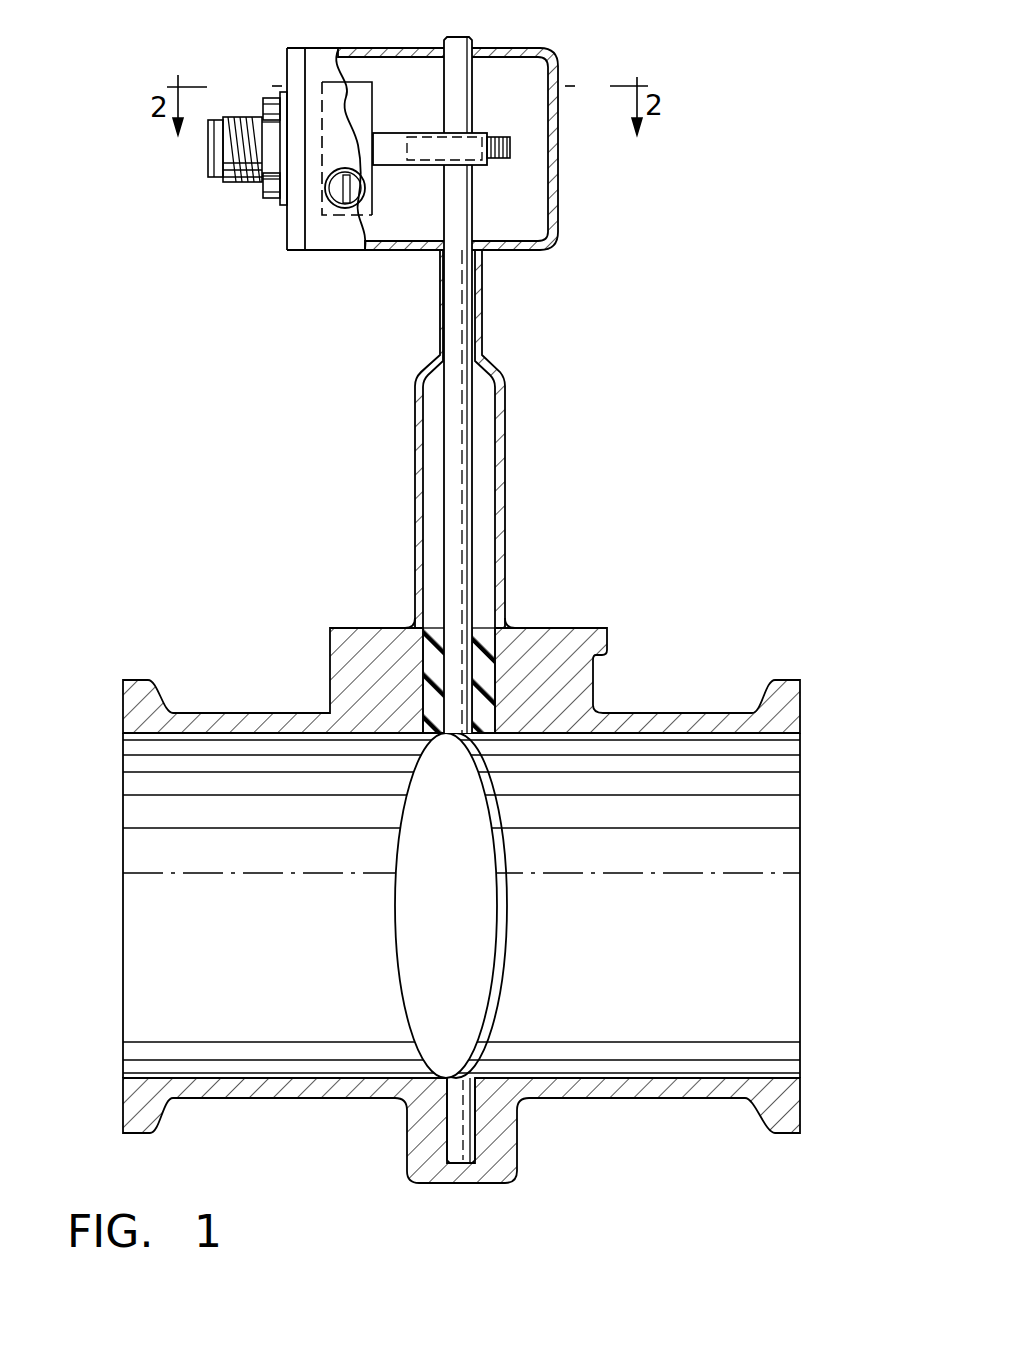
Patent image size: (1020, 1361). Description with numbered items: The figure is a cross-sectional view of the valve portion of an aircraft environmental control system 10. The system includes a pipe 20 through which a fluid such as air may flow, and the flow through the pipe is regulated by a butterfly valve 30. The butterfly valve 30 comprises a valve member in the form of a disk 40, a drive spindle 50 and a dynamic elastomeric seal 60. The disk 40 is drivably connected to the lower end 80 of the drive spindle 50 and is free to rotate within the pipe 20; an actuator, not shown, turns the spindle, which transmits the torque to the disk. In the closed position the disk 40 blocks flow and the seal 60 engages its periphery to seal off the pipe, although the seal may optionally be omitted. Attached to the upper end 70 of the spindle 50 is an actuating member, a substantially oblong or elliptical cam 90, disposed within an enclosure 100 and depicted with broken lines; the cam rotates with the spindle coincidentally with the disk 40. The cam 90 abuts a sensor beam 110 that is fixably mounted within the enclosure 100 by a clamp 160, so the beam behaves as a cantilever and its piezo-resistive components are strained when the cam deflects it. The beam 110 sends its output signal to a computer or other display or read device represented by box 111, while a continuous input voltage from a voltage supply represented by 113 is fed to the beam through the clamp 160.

The aircraft environmental control system 10 is at (193, 648).
The pipe 20 is at (770, 1078).
The butterfly valve 30 is at (682, 850).
The disk 40 is at (451, 905).
The drive spindle 50 is at (458, 35).
The elastomeric seal 60 is at (487, 682).
The upper end 70 is at (455, 83).
The lower end 80 is at (457, 1120).
The cam 90 is at (500, 158).
The enclosure 100 is at (541, 50).
The sensor beam 110 is at (481, 133).
The computer or other display or read device 111 is at (210, 132).
The voltage supply 113 is at (210, 157).
The clamp 160 is at (357, 82).